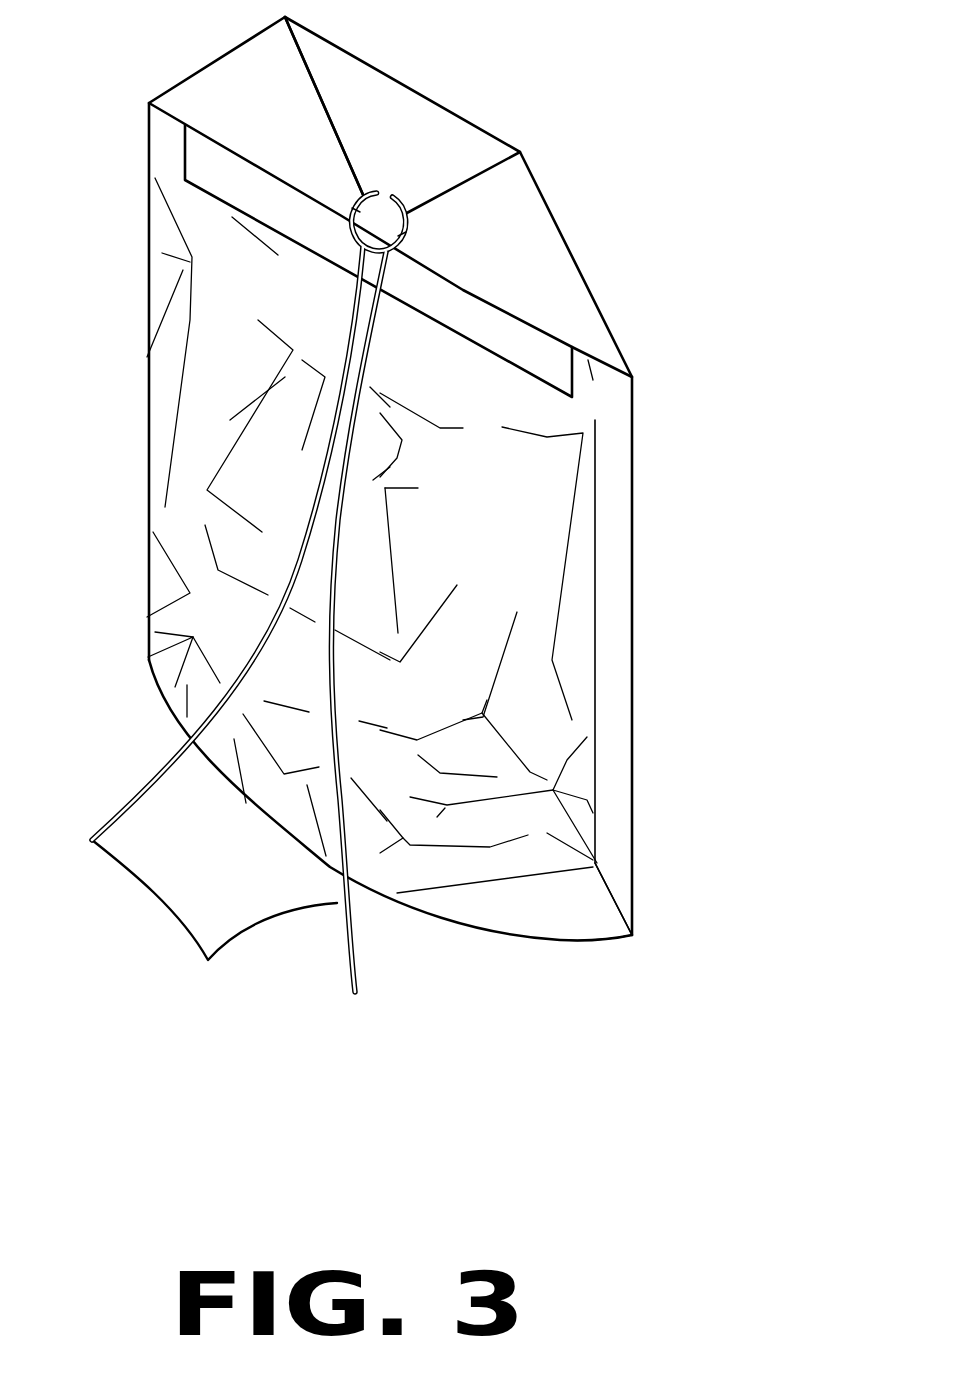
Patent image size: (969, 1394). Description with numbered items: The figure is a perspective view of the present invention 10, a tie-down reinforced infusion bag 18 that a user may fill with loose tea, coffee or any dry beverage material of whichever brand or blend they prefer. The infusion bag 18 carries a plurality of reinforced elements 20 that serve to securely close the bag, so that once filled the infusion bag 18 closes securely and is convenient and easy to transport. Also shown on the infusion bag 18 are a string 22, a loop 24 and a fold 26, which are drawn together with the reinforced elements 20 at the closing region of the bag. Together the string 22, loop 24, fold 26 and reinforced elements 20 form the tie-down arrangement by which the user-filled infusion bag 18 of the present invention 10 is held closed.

The present invention 10 is at (670, 227).
The infusion bag 18 is at (585, 913).
The reinforced elements 20 is at (282, 197).
The string 22 is at (214, 928).
The loop 24 is at (357, 245).
The fold 26 is at (327, 125).